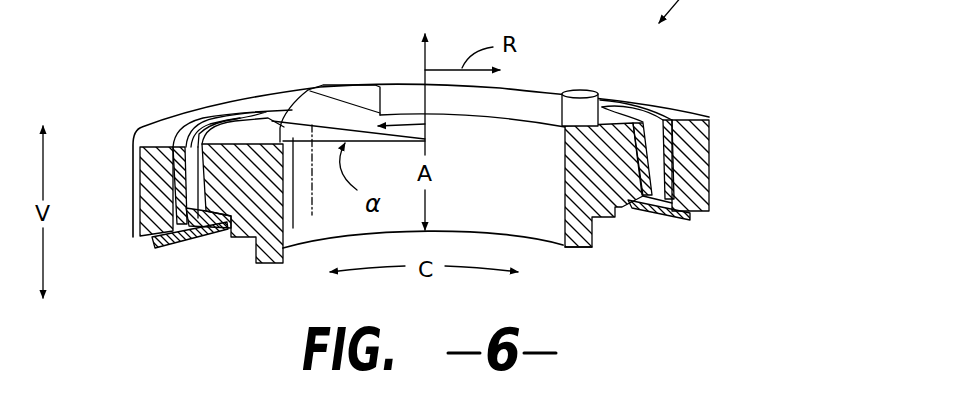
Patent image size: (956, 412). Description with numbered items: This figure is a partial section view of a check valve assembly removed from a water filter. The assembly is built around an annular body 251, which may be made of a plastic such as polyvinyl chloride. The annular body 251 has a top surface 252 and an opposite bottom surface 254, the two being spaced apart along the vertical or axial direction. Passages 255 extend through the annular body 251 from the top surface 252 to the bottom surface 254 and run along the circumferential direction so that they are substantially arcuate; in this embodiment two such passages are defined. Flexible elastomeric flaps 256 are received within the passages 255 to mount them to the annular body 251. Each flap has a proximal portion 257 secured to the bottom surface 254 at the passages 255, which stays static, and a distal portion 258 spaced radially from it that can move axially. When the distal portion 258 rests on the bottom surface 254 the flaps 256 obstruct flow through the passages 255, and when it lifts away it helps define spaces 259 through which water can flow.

The annular body 251 is at (305, 226).
The top surface 252 is at (532, 96).
The bottom surface 254 is at (536, 247).
The passages 255 is at (190, 121).
The flaps 256 is at (182, 188).
The proximal portion 257 is at (228, 240).
The distal portion 258 is at (160, 250).
The spaces 259 is at (698, 216).